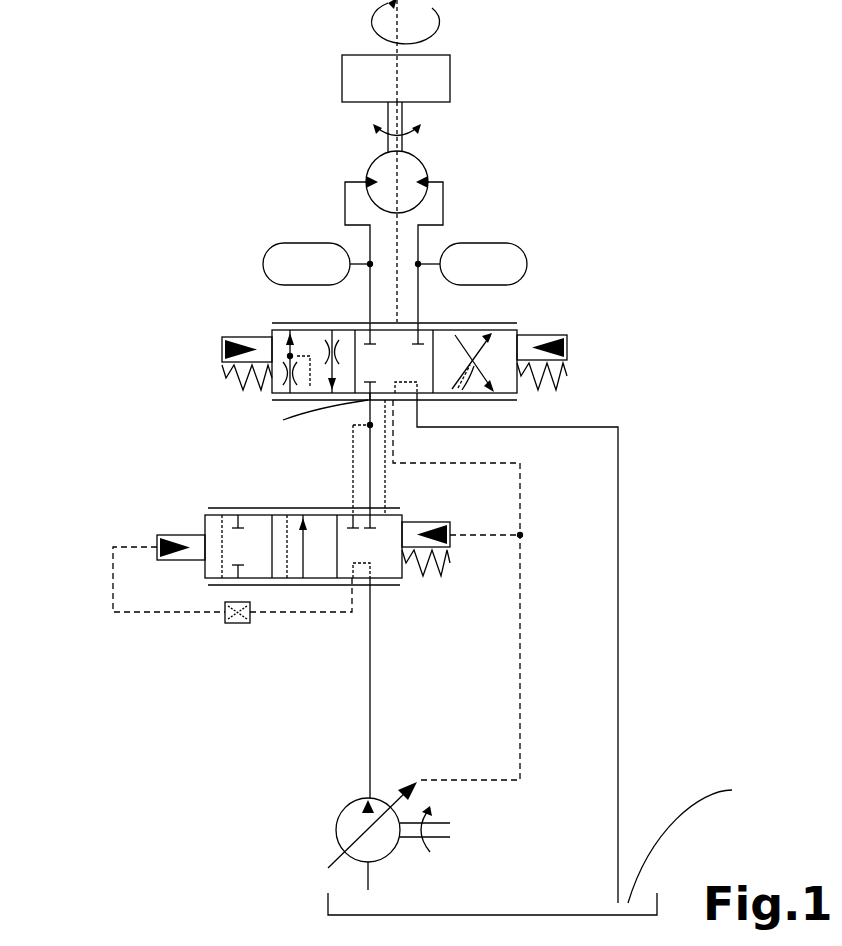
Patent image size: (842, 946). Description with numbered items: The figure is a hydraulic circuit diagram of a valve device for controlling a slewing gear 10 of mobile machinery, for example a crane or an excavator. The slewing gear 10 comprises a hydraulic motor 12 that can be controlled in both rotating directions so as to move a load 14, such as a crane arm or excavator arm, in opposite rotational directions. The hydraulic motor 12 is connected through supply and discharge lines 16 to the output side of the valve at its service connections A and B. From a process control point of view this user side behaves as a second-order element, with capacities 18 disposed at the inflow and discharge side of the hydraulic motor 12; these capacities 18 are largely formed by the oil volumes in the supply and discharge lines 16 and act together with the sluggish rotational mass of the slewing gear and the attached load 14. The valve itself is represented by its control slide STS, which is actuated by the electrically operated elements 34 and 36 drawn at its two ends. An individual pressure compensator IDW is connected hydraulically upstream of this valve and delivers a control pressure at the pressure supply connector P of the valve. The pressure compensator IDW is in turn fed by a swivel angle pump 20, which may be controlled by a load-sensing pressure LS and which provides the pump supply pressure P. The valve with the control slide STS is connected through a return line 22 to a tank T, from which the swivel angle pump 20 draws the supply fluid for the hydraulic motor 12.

The slewing gear 10 is at (455, 132).
The hydraulic motor 12 is at (425, 176).
The load 14 is at (424, 76).
The supply and discharge lines 16 is at (345, 200).
The capacities 18 is at (263, 265).
The swivel angle pump 20 is at (336, 828).
The return line 22 is at (620, 598).
The left actuating solenoid of steering valve 34 is at (218, 350).
The right actuating solenoid of steering valve 36 is at (567, 356).
The control slide STS is at (502, 350).
The individual pressure compensator IDW is at (240, 508).
The load-sensing pressure LS is at (462, 606).
The pressure supply connector P is at (326, 454).
The tank T is at (538, 848).